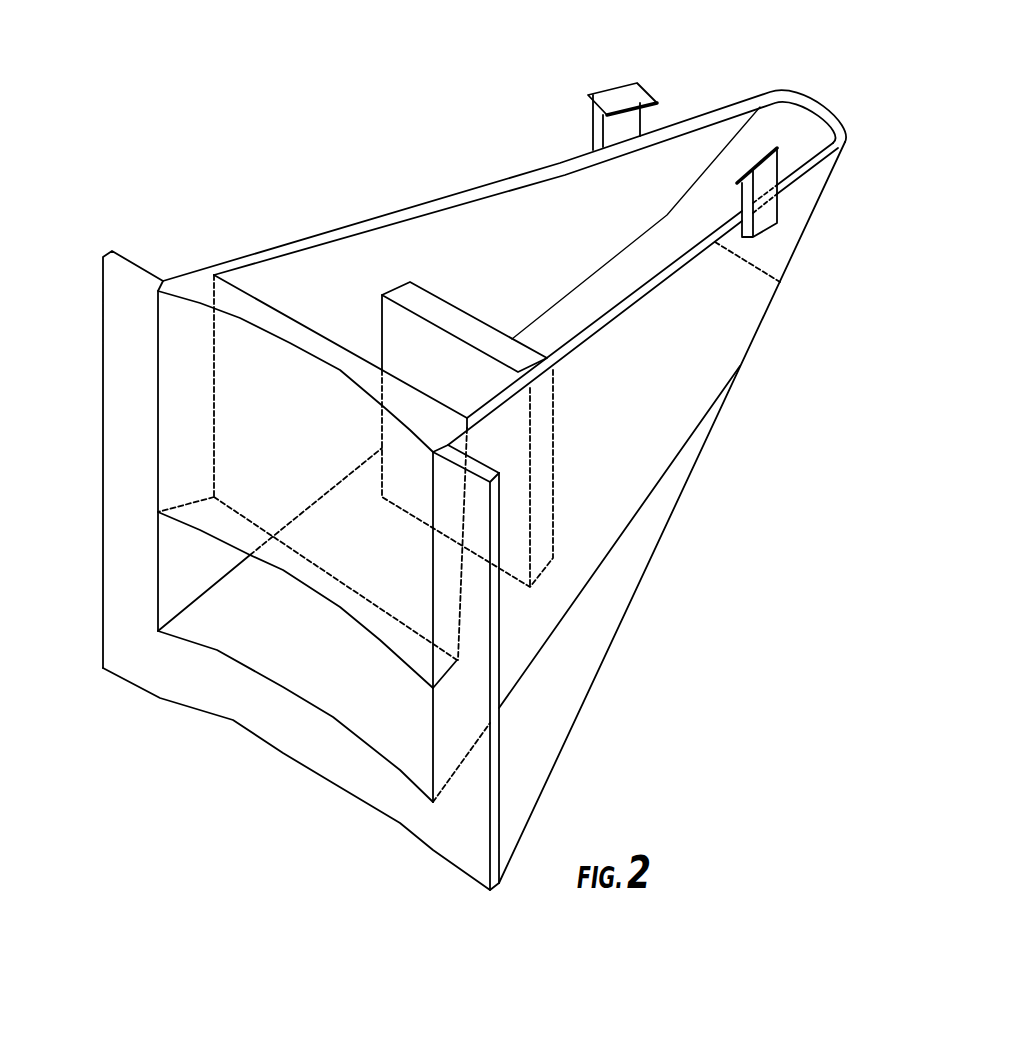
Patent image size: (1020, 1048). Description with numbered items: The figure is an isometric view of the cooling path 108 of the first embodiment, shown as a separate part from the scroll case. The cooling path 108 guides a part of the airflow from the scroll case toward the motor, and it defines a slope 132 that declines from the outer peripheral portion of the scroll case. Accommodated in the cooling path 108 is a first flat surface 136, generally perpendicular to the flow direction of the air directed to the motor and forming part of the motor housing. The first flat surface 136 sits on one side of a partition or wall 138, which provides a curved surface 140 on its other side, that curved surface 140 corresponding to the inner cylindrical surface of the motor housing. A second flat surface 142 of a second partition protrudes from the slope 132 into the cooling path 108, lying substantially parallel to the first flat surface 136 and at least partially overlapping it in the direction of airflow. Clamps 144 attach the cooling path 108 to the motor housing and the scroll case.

The cooling path 108 is at (692, 541).
The slope 132 is at (697, 363).
The first flat surface 136 is at (345, 347).
The wall 138 is at (255, 307).
The curved surface 140 is at (214, 432).
The second flat surface 142 is at (413, 338).
The clamps 144 is at (624, 100).